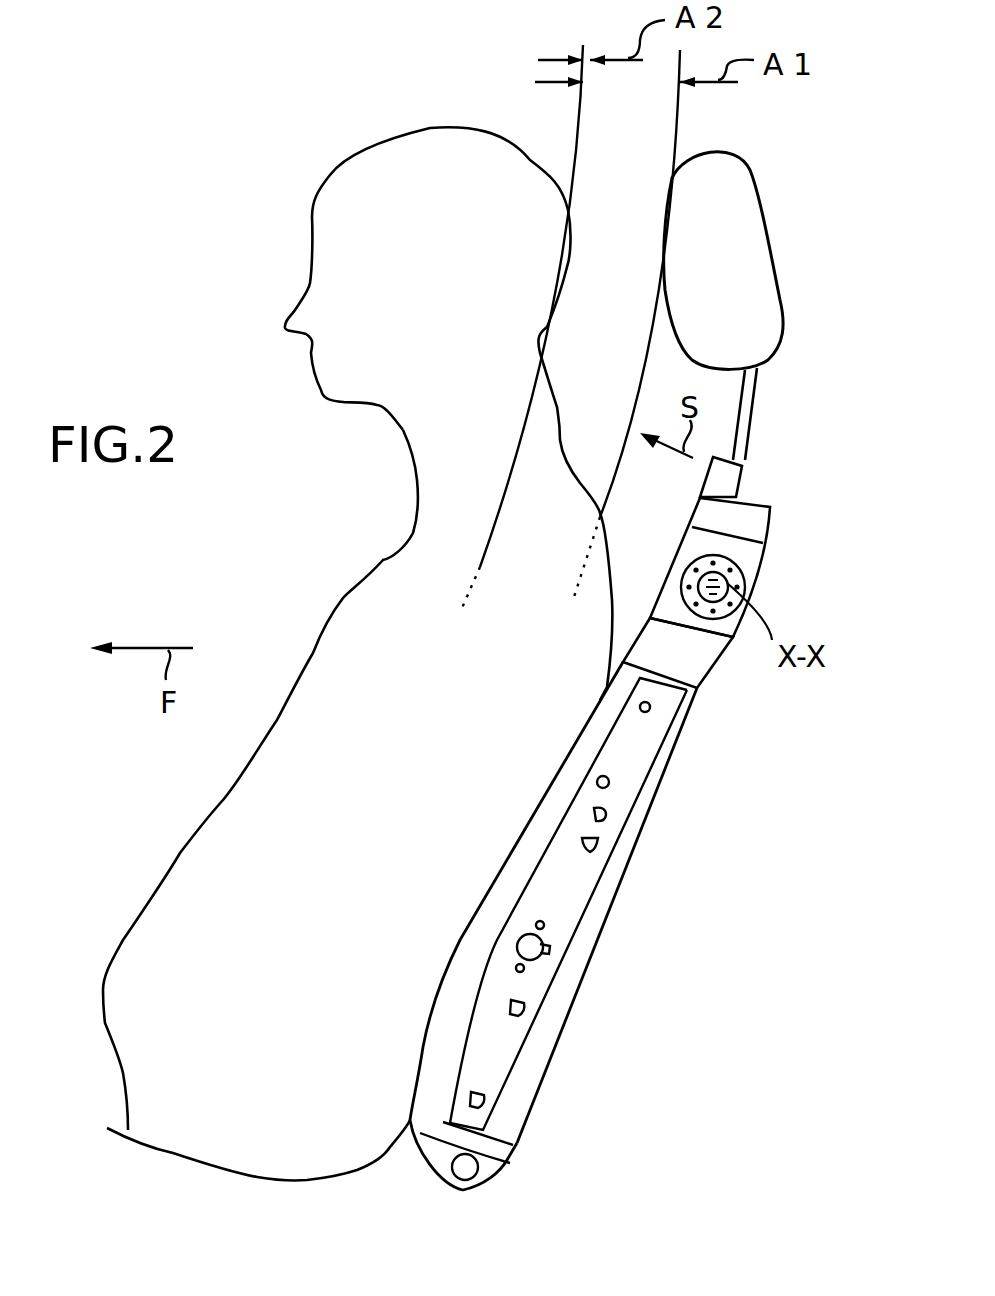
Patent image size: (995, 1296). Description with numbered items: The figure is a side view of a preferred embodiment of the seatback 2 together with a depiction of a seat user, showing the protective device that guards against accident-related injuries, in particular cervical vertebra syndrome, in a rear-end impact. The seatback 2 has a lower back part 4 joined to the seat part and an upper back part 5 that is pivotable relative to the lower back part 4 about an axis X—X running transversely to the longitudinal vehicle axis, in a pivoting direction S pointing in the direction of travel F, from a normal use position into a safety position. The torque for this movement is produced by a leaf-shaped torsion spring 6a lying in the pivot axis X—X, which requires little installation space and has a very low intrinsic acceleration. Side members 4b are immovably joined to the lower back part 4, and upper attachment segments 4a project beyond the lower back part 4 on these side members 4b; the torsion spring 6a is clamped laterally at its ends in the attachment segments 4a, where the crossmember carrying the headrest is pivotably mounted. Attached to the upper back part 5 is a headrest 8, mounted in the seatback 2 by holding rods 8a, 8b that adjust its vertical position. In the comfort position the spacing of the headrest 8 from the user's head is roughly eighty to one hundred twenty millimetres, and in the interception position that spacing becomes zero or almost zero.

The seatback 2 is at (582, 916).
The lower back part 4 is at (507, 1050).
The upper attachment segment 4a is at (735, 552).
The side member 4b is at (672, 653).
The upper back part 5 is at (720, 632).
The torsion spring 6a is at (720, 585).
The headrest 8 is at (750, 236).
The holding rod 8a is at (811, 409).
The holding rod 8b is at (757, 403).